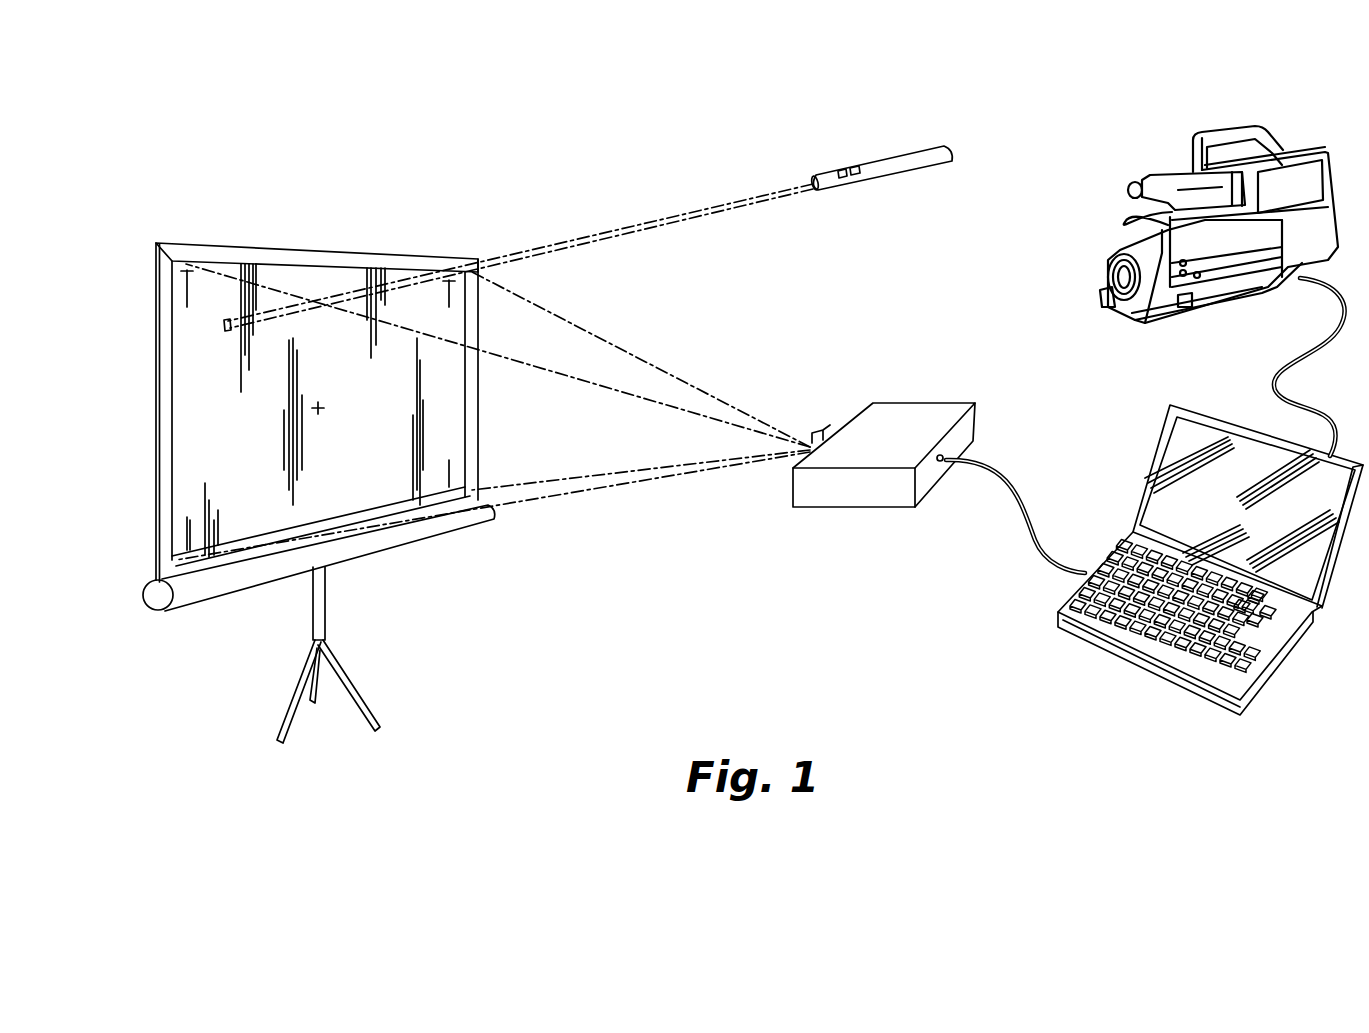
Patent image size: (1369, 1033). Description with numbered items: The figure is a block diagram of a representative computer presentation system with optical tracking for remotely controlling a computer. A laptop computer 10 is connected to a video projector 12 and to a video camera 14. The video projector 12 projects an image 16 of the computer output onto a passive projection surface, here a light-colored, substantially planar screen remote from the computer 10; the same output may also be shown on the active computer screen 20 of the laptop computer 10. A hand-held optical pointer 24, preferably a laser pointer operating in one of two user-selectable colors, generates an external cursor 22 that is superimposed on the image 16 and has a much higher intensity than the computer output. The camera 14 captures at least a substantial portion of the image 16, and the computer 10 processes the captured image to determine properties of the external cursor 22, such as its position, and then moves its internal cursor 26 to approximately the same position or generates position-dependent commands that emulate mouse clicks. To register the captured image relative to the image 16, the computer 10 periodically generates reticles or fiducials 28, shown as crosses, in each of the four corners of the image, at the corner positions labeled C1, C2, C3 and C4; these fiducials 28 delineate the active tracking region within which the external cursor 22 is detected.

The computer 10 is at (1194, 571).
The video projector 12 is at (860, 510).
The video camera 14 is at (1138, 325).
The image 16 is at (338, 246).
The computer screen 20 is at (1193, 493).
The external cursor 22 is at (225, 318).
The optical pointer 24 is at (893, 178).
The internal cursor 26 is at (320, 412).
The fiducials 28 is at (434, 475).
The calibration point C1' C1 is at (187, 272).
The calibration point C2' C2 is at (480, 272).
The calibration point C3' C3 is at (480, 492).
The calibration point C4' C4 is at (165, 565).